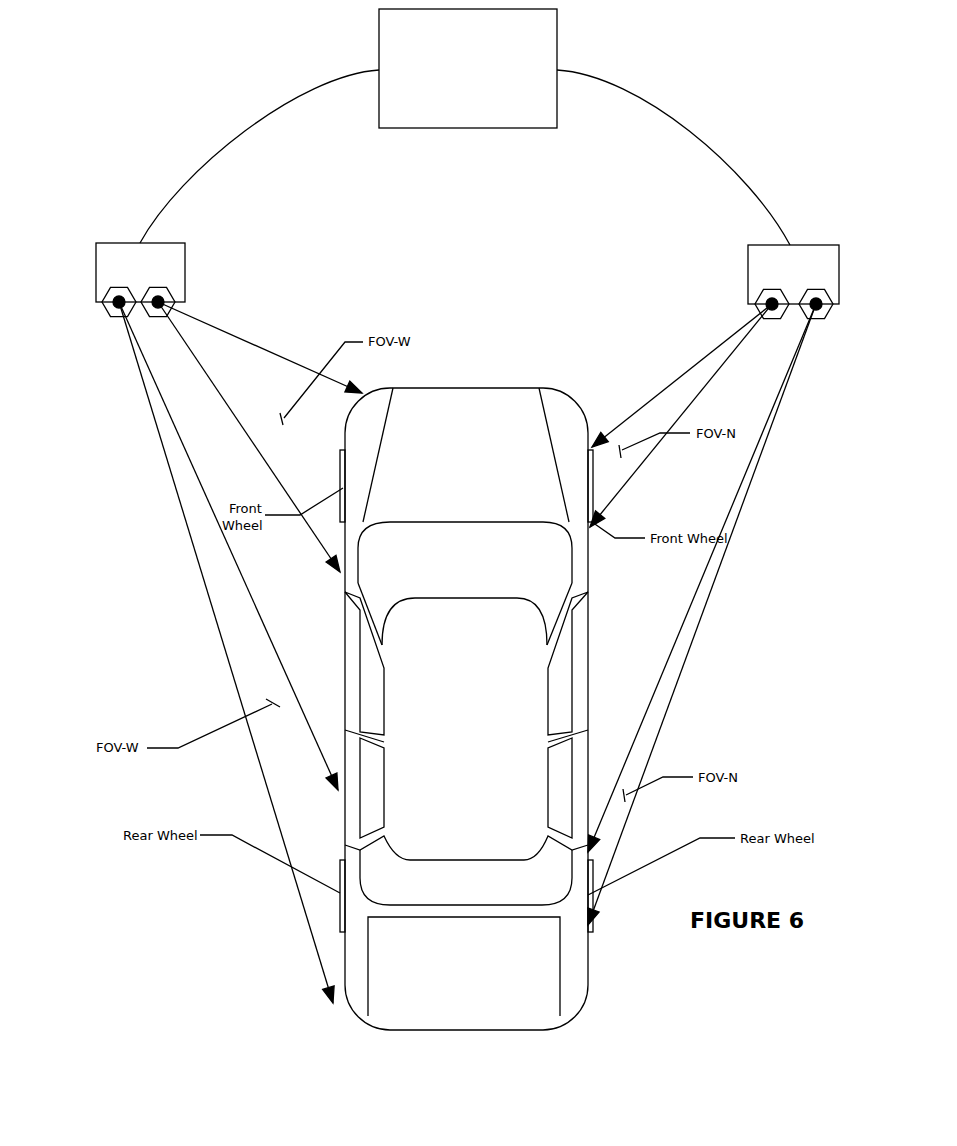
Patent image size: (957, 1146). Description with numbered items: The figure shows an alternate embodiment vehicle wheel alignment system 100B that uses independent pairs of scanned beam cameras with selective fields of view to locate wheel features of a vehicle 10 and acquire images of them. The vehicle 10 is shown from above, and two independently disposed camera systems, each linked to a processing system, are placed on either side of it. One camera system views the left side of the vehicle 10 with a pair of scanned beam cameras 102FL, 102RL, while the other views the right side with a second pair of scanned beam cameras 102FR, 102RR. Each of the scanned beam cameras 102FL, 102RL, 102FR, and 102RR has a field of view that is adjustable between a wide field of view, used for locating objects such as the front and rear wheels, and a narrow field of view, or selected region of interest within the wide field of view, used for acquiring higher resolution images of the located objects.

The vehicle wheel alignment system 100B is at (468, 68).
The vehicle 10 is at (466, 709).
The scanned beam camera 102RR is at (118, 308).
The scanned beam camera 102FR is at (162, 303).
The scanned beam camera 102FL is at (768, 305).
The scanned beam camera 102RL is at (818, 308).